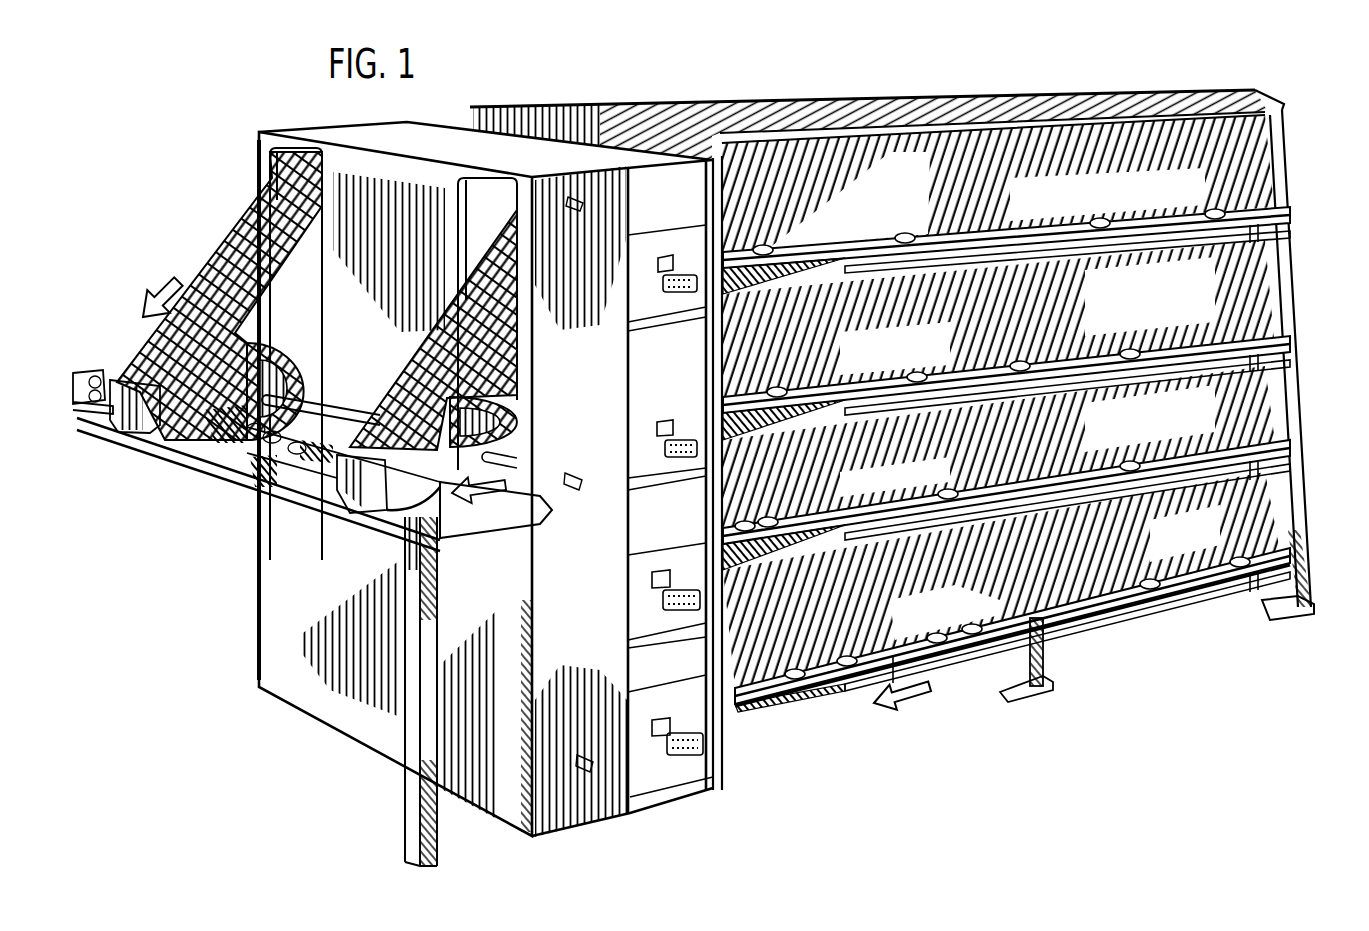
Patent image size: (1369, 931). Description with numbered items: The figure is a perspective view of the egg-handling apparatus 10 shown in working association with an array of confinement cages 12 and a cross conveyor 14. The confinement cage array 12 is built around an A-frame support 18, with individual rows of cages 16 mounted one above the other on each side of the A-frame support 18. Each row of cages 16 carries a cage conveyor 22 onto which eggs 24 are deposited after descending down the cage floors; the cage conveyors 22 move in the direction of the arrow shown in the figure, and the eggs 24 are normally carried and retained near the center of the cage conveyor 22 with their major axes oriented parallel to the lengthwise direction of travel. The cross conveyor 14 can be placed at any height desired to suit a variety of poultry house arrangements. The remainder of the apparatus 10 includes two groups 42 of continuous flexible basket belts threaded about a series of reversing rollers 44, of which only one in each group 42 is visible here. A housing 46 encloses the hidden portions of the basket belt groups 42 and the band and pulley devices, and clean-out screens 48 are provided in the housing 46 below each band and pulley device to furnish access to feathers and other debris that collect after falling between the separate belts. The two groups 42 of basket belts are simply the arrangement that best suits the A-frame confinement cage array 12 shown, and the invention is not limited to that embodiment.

The apparatus 10 is at (237, 190).
The array of confinement cages 12 is at (857, 92).
The cross conveyor 14 is at (493, 530).
The rows of cages 16 is at (1272, 132).
The A-frame support 18 is at (1047, 650).
The cage conveyor 22 is at (1138, 212).
The eggs 24 is at (1100, 225).
The groups of continuous flexible basket belts 42 is at (232, 243).
The reversing rollers 44 is at (498, 437).
The housing 46 is at (409, 219).
The clean-out screens 48 is at (680, 300).